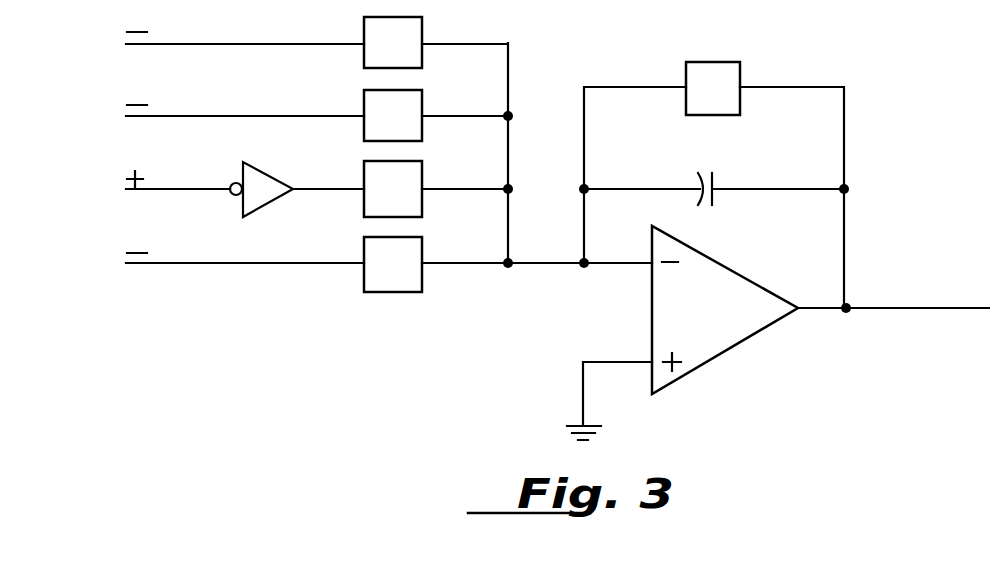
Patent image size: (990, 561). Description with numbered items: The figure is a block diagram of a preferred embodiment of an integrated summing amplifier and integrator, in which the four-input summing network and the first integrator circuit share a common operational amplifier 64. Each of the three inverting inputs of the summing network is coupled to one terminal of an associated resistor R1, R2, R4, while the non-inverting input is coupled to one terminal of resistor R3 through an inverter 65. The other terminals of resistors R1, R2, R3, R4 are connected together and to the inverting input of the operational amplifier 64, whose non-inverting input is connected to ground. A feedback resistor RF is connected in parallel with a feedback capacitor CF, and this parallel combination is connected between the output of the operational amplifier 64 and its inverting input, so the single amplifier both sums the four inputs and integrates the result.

The operational amplifier 64 is at (727, 337).
The inverter 65 is at (263, 186).
The resistor R1 is at (393, 42).
The resistor R2 is at (393, 115).
The resistor R3 is at (393, 189).
The resistor R4 is at (393, 264).
The feedback resistor RF is at (713, 88).
The feedback capacitor CF is at (722, 179).